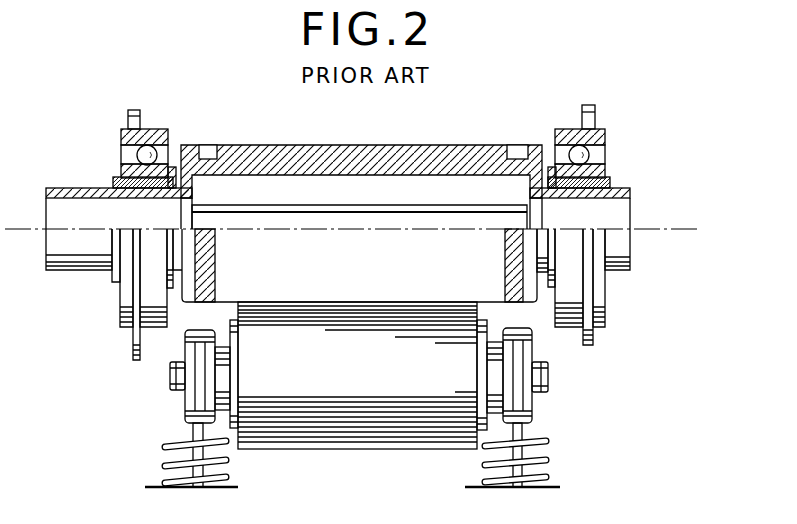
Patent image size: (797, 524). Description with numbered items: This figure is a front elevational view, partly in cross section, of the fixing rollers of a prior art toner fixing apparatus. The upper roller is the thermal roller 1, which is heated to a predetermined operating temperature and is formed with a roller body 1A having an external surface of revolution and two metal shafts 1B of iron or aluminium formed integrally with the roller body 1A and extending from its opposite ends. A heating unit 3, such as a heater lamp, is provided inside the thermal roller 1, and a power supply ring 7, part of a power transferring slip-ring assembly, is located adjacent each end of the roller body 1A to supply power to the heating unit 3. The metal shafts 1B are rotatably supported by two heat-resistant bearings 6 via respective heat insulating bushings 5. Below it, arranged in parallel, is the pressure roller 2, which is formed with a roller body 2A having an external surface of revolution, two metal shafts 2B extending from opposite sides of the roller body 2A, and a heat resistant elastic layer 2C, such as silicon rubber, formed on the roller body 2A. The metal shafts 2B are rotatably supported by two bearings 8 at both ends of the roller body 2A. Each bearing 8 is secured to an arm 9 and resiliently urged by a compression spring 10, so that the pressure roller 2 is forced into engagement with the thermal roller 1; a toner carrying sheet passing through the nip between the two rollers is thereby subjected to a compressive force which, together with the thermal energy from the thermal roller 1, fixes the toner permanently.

The thermal roller 1 is at (90, 290).
The roller body 1A is at (322, 146).
The metal shafts 1B is at (68, 190).
The pressure roller 2 is at (140, 410).
The roller body 2A is at (242, 405).
The metal shafts 2B is at (170, 378).
The heat resistant elastic layer 2C is at (375, 447).
The heating unit 3 is at (410, 207).
The heat insulating bushings 5 is at (113, 180).
The heat-resistant bearings 6 is at (121, 133).
The power supply ring 7 is at (213, 145).
The bearings 8 is at (187, 413).
The arm 9 is at (190, 432).
The compression spring 10 is at (160, 477).